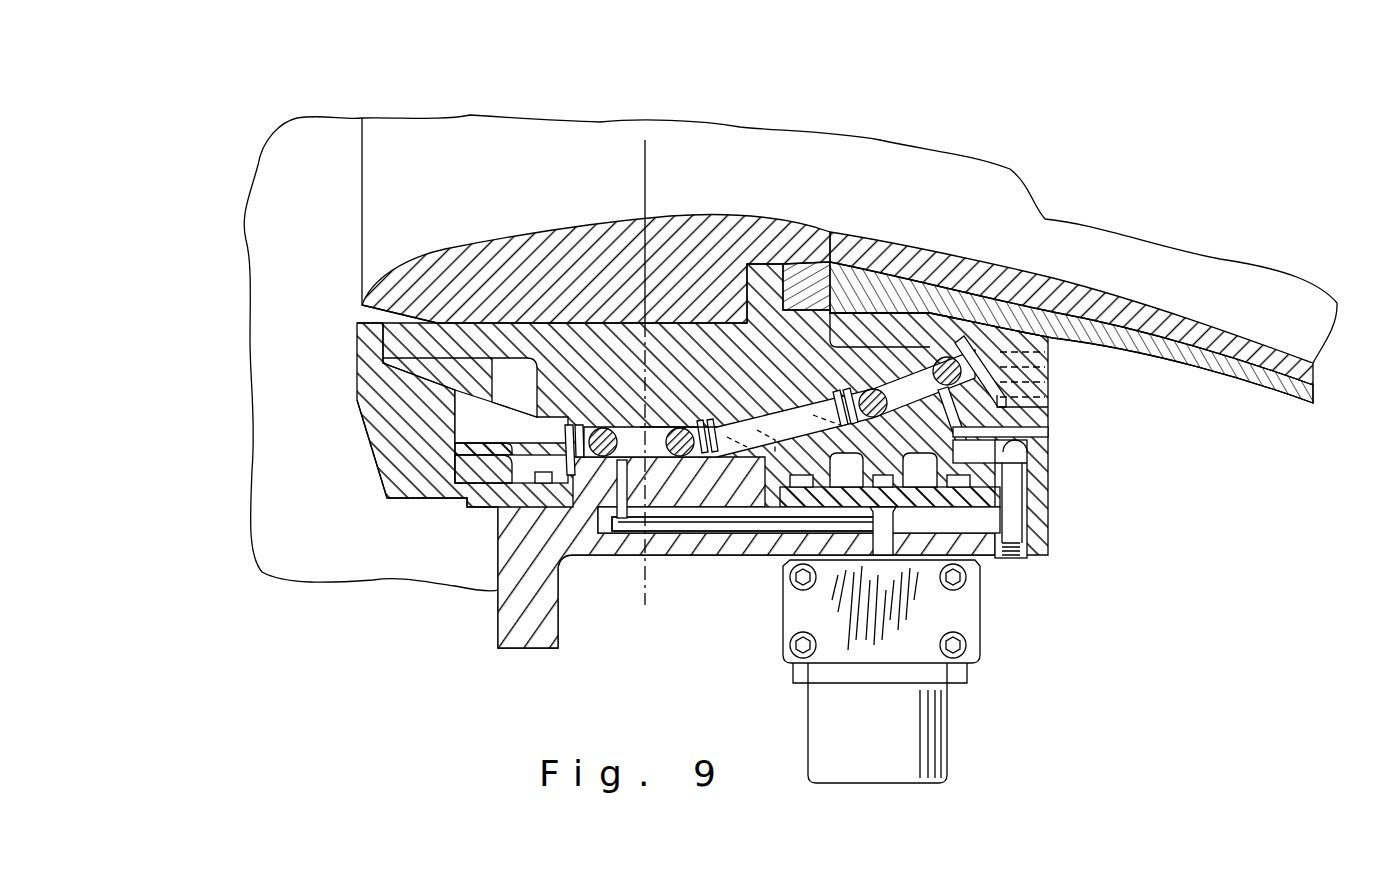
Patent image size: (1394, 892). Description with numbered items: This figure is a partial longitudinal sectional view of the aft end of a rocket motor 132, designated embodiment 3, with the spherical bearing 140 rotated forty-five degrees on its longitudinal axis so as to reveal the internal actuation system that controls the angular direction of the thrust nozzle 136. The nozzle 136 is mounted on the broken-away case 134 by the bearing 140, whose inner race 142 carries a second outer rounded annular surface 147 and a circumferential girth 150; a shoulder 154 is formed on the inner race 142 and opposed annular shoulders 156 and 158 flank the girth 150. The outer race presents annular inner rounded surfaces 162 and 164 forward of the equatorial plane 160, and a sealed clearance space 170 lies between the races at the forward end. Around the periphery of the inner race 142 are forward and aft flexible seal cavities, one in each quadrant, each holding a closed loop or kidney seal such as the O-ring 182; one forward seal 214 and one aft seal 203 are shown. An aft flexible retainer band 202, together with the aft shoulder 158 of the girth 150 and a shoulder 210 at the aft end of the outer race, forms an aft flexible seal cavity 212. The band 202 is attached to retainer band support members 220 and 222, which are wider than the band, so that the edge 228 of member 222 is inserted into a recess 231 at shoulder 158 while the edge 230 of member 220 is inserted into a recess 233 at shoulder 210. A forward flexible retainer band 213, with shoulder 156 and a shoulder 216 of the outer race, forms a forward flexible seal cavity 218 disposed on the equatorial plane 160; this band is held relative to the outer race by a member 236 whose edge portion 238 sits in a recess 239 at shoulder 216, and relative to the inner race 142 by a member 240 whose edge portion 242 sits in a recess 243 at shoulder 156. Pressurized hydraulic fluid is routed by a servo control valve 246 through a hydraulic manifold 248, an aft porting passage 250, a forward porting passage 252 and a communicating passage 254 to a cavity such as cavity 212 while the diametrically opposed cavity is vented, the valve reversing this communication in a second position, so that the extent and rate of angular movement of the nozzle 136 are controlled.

The embodiment 3 is at (395, 622).
The rocket motor 132 is at (305, 170).
The case 134 is at (341, 116).
The thrust nozzle 136 is at (1297, 370).
The spherical bearing 140 is at (355, 435).
The inner race 142 is at (547, 373).
The second outer rounded annular surface 147 is at (910, 380).
The circumferential girth 150 is at (767, 440).
The shoulder 154 is at (450, 392).
The annular shoulder 156 is at (730, 433).
The aft shoulder 158 is at (877, 469).
The equatorial plane 160 is at (648, 180).
The annular inner rounded surface 162 is at (440, 340).
The annular inner rounded surface 164 is at (473, 418).
The clearance space 170 is at (356, 302).
The closed loop seal 182 is at (767, 442).
The aft flexible retainer band 202 is at (877, 389).
The aft seal 203 is at (920, 397).
The shoulder 210 is at (970, 360).
The aft flexible seal cavity 212 is at (928, 423).
The plate 213 is at (559, 427).
The forward seal 214 is at (603, 427).
The shoulder 216 is at (572, 453).
The forward flexible seal cavity 218 is at (657, 433).
The retainer band support member 220 is at (990, 330).
The retainer band support member 222 is at (783, 431).
The edge 228 is at (854, 334).
The edge 230 is at (1110, 330).
The recess 231 is at (847, 413).
The recess 233 is at (1065, 314).
The member 236 is at (568, 430).
The edge portion 238 is at (590, 478).
The recess 239 is at (603, 470).
The member 240 is at (722, 442).
The edge portion 242 is at (725, 450).
The recess 243 is at (709, 420).
The servo control valve 246 is at (955, 617).
The hydraulic manifold 248 is at (1022, 507).
The aft porting passage 250 is at (997, 430).
The forward porting passage 252 is at (733, 530).
The communicating passage 254 is at (600, 510).